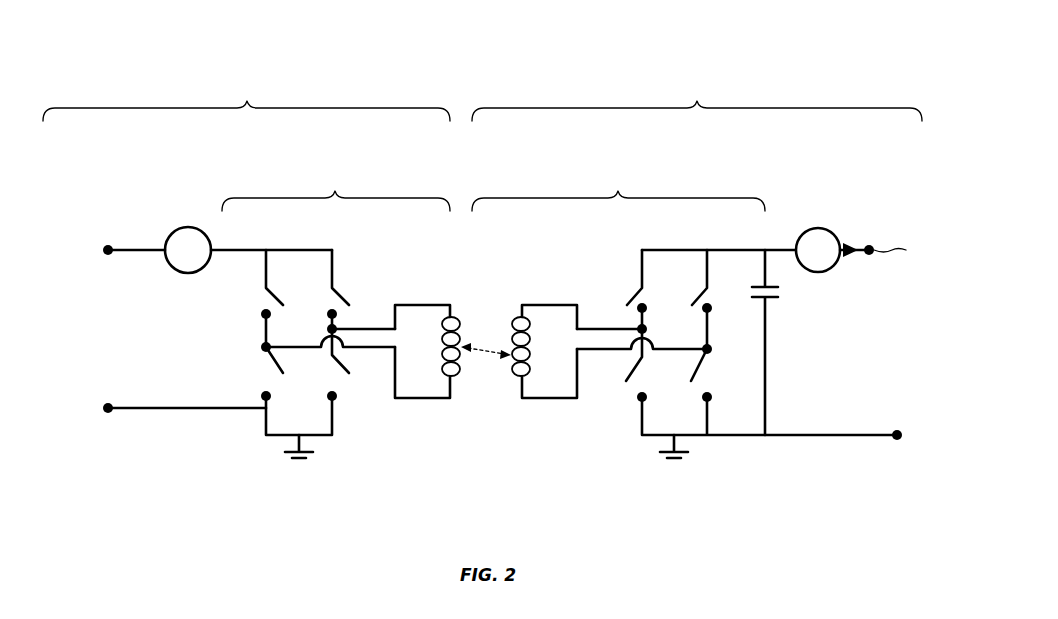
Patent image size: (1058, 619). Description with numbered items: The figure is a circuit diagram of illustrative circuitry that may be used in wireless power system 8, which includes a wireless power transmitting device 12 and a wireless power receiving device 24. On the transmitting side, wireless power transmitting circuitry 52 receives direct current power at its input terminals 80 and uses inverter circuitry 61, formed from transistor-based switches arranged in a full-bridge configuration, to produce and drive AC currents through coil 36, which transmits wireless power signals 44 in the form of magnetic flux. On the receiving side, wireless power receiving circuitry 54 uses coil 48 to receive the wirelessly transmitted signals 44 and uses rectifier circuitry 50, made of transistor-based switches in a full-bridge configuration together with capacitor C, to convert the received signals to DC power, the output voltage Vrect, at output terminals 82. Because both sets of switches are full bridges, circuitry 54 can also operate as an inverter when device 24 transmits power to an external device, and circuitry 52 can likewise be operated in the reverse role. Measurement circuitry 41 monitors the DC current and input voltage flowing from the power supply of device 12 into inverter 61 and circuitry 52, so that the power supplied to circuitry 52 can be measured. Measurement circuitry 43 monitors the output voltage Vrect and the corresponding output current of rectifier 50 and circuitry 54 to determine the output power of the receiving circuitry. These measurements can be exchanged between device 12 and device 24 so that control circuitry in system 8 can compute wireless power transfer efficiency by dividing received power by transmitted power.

The wireless power system 8 is at (838, 66).
The wireless power transmitting device 12 is at (246, 100).
The wireless power receiving device 24 is at (697, 100).
The measurement circuitry 41 is at (188, 236).
The measurement circuitry 43 is at (818, 233).
The wireless power transmitting circuitry 52 is at (336, 191).
The wireless power receiving circuitry 54 is at (618, 191).
The inverter circuitry 61 is at (265, 469).
The rectifier circuitry 50 is at (740, 469).
The coil 36 is at (456, 378).
The coil 48 is at (516, 378).
The wireless power signals 44 is at (492, 352).
The input terminals 80 is at (108, 256).
The output terminals 82 is at (870, 256).